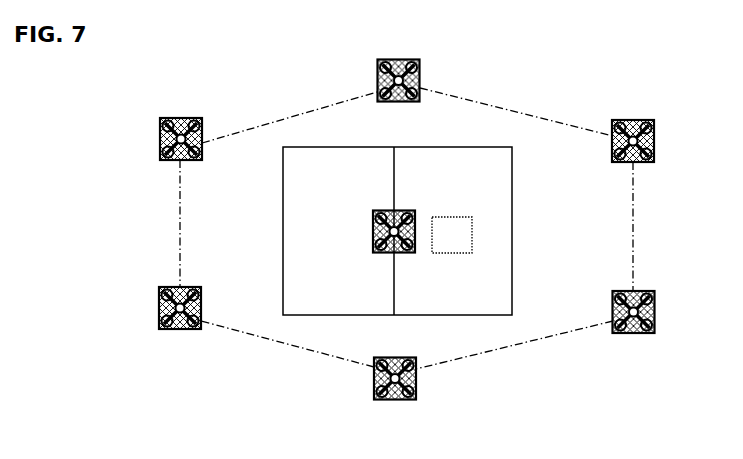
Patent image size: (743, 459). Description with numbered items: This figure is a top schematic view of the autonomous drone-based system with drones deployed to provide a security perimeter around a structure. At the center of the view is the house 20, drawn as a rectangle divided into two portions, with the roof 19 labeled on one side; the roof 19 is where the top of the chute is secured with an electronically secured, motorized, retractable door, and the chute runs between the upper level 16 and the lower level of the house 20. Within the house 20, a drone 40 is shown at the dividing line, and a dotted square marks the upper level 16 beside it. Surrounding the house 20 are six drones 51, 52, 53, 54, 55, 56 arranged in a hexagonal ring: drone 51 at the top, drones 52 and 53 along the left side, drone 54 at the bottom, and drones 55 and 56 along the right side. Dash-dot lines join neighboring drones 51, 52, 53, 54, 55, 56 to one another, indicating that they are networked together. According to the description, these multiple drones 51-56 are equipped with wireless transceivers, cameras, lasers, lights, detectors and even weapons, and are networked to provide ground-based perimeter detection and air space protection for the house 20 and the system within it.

The upper level 16 is at (442, 253).
The roof 19 is at (342, 283).
The house 20 is at (370, 231).
The central drone 40 is at (373, 222).
The drone 51 is at (420, 78).
The drone 52 is at (160, 140).
The drone 53 is at (159, 307).
The drone 54 is at (374, 395).
The drone 55 is at (654, 321).
The drone 56 is at (653, 137).